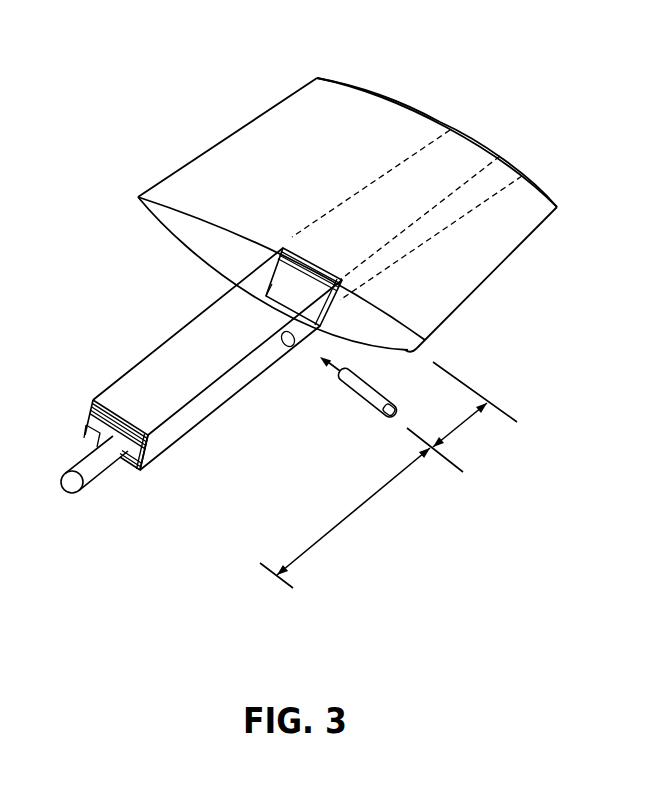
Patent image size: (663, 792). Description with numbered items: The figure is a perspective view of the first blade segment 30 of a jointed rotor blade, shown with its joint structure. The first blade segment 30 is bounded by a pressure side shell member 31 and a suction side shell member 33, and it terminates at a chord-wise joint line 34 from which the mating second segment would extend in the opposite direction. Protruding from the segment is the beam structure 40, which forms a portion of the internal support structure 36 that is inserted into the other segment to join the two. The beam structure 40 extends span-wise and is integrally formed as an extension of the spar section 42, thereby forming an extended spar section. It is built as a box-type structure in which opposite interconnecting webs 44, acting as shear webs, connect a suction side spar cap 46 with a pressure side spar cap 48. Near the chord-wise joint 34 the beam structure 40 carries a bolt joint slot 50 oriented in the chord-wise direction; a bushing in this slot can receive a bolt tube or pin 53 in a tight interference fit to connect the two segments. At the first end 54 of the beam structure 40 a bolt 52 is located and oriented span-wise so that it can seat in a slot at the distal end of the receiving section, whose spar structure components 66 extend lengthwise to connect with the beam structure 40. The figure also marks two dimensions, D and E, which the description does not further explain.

The first blade segment 30 is at (228, 137).
The pressure side shell member 31 is at (376, 112).
The suction side shell member 33 is at (209, 265).
The chord-wise joint line 34 is at (236, 238).
The internal support structure 36 is at (230, 419).
The beam structure 40 is at (155, 369).
The spar section 42 is at (460, 143).
The interconnecting web 44 is at (258, 362).
The suction side spar cap 46 is at (98, 426).
The pressure side spar cap 48 is at (96, 408).
The bolt joint slot 50 is at (290, 348).
The bolt 52 is at (98, 474).
The bolt tube or pin 53 is at (360, 398).
The first end 54 is at (152, 473).
The spar structure components 66 is at (405, 195).
The distance D is at (393, 478).
The distance E is at (460, 427).